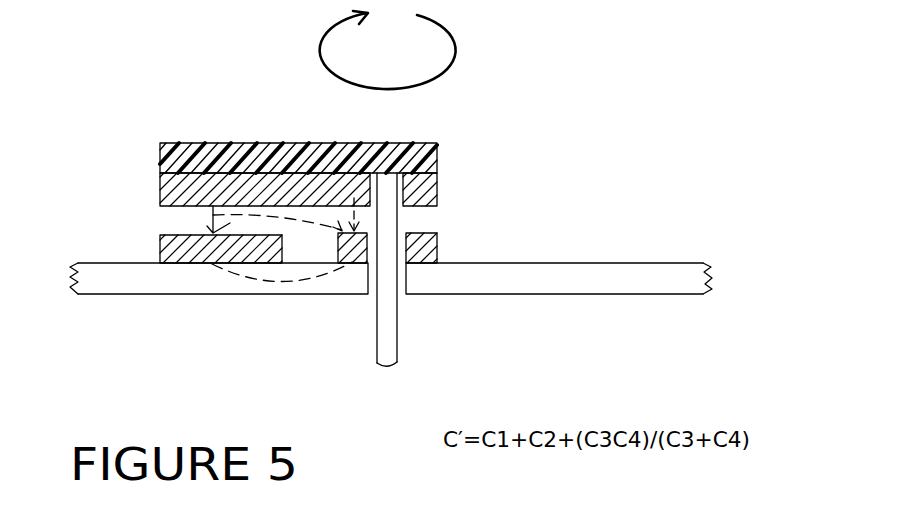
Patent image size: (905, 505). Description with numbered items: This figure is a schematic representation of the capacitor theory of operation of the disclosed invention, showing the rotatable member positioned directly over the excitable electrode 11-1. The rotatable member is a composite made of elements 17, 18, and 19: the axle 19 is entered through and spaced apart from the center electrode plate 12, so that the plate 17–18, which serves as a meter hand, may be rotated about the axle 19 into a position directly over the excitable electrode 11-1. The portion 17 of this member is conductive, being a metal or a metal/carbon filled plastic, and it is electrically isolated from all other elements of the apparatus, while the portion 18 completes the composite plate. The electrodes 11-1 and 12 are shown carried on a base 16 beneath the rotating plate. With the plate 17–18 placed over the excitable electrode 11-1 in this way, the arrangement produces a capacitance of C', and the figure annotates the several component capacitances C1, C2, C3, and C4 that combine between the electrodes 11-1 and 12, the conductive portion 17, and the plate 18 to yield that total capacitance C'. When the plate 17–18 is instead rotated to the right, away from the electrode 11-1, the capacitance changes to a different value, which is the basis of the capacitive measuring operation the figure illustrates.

The excitable electrode 11-1 is at (160, 253).
The center electrode plate 12 is at (368, 243).
The substrate 16 is at (129, 280).
The conductive portion of rotatable member 17 is at (175, 188).
The plate portion of rotatable member 18 is at (400, 150).
The axle 19 is at (398, 338).
The capacitance C1 is at (297, 280).
The capacitance C2 is at (254, 218).
The capacitance C3 is at (350, 226).
The capacitance C4 is at (213, 215).